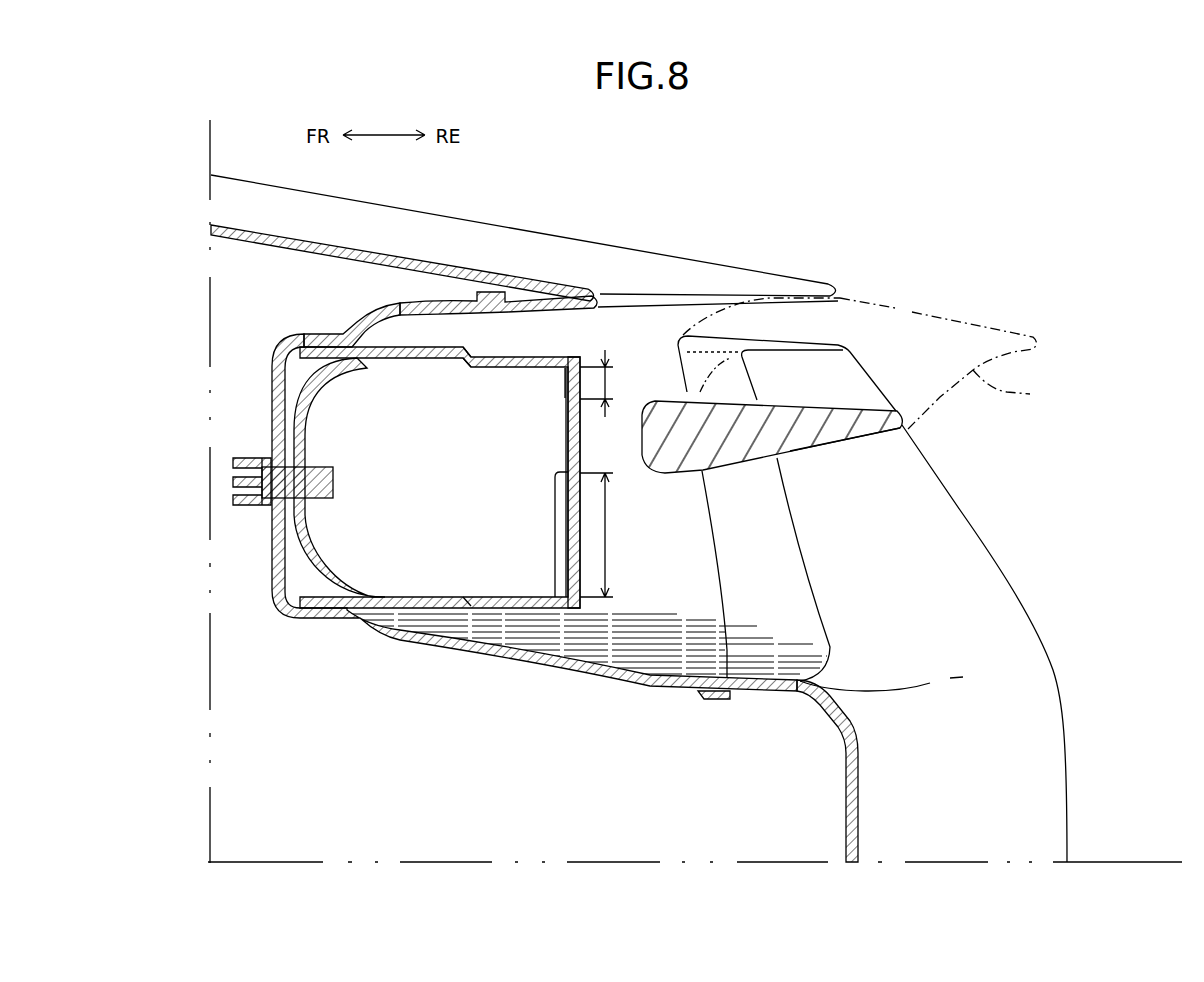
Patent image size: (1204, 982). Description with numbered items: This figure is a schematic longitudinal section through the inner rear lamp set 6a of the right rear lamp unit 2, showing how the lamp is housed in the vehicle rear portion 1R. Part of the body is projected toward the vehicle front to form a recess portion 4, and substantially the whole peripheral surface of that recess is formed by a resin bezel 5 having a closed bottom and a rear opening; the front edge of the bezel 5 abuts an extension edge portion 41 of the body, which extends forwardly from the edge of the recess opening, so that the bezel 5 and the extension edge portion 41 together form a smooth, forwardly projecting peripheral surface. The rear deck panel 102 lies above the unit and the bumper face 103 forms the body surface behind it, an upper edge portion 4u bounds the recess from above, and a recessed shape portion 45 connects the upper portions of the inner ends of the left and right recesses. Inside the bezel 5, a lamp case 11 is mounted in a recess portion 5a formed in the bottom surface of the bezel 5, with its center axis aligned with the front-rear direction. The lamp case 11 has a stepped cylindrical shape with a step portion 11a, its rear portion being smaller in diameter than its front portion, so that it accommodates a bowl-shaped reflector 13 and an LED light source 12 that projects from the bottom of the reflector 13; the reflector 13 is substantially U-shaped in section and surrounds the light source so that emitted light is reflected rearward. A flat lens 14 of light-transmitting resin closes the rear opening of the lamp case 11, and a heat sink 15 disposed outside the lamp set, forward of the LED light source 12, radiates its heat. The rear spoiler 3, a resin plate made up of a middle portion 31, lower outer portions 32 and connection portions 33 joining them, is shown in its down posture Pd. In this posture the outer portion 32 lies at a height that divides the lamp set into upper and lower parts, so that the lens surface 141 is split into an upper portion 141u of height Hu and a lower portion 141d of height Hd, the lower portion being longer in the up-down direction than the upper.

The rear deck panel 102 is at (580, 240).
The vehicle rear portion 1R is at (664, 200).
The upper edge portion 4u is at (604, 288).
The recess portion 5a is at (316, 338).
The bezel 5 is at (528, 666).
The lamp case 11 is at (522, 356).
The step portion 11a is at (472, 351).
The lens 14 is at (546, 456).
The lens surface 141 is at (567, 447).
The upper portion of lens surface 141u is at (567, 399).
The lower portion of lens surface 141d is at (555, 531).
The reflector 13 is at (329, 397).
The LED light source 12 is at (335, 484).
The heat sink 15 is at (247, 506).
The length of upper portion of lens surface Hu is at (610, 383).
The length of lower portion of lens surface Hd is at (610, 535).
The inner rear lamp set 6a is at (632, 501).
The recessed shape portion 45 is at (701, 337).
The rear spoiler 3 is at (819, 462).
The outer portion 32 is at (840, 447).
The rear lamp unit 2 is at (821, 556).
The recess portion 4 is at (799, 595).
The extension edge portion 41 is at (757, 693).
The bumper face 103 is at (971, 520).
The middle portion 31 is at (912, 312).
The connection portion 33 is at (1032, 395).
The down posture Pd is at (988, 302).